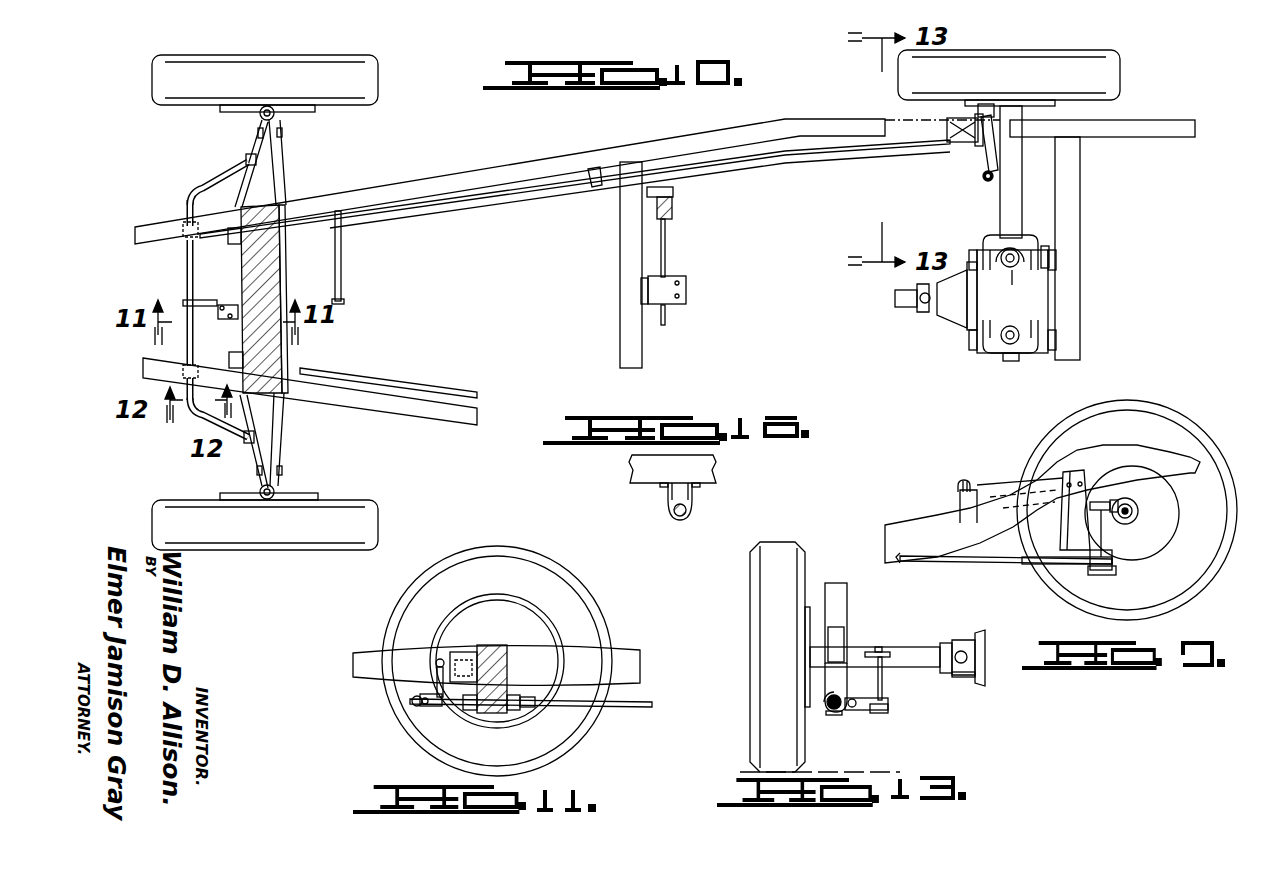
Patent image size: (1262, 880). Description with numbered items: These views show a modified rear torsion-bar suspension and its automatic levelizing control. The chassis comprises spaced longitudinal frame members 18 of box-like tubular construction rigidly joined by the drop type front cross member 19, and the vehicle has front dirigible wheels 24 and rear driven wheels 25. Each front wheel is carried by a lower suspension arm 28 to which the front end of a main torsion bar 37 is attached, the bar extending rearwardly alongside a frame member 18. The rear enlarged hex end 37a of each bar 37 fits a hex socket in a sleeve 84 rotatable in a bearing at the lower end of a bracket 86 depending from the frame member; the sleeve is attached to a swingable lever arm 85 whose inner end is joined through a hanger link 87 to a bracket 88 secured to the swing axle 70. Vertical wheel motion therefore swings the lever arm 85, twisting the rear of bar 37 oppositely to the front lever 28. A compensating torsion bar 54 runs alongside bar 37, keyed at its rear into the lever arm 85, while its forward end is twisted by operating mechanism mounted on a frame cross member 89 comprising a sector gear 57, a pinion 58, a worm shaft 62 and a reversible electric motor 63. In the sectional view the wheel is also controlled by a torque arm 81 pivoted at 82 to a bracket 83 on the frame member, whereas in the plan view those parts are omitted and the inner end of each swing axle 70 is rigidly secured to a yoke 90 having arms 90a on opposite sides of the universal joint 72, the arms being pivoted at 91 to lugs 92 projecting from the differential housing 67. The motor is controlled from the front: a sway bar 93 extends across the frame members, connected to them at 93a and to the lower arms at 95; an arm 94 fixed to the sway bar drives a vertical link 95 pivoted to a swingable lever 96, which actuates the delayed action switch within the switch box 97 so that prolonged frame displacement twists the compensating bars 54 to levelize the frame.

In FIG. 10, the longitudinal frame member 18 is at (530, 162).
In FIG. 12, the longitudinal frame member 18 is at (628, 470).
In FIG. 11, the longitudinal frame member 18 is at (620, 656).
In FIG. 13, the longitudinal frame member 18 is at (846, 624).
In FIG. 9, the longitudinal frame member 18 is at (888, 523).
In FIG. 10, the front cross member 19 is at (282, 262).
In FIG. 11, the front cross member 19 is at (508, 662).
In FIG. 10, the front dirigible wheel 24 is at (368, 80).
In FIG. 11, the front dirigible wheel 24 is at (565, 592).
In FIG. 10, the rear driven wheel 25 is at (1118, 70).
In FIG. 13, the rear driven wheel 25 is at (790, 548).
In FIG. 9, the rear driven wheel 25 is at (1150, 403).
In FIG. 10, the lower suspension arm 28 is at (276, 185).
In FIG. 10, the main torsion bar 37 is at (450, 205).
In FIG. 11, the main torsion bar 37 is at (632, 707).
In FIG. 13, the main torsion bar 37 is at (828, 716).
In FIG. 9, the main torsion bar 37 is at (985, 563).
In FIG. 10, the enlarged hex end 37a is at (988, 108).
In FIG. 10, the compensating torsion bar 54 is at (779, 167).
In FIG. 13, the compensating torsion bar 54 is at (845, 712).
In FIG. 9, the compensating torsion bar 54 is at (1095, 570).
In FIG. 10, the sector gear 57 is at (675, 215).
In FIG. 10, the pinion 58 is at (592, 190).
In FIG. 10, the shaft 62 is at (668, 252).
In FIG. 10, the reversible electric motor 63 is at (680, 300).
In FIG. 10, the differential housing 67 is at (1000, 305).
In FIG. 10, the swing axle 70 is at (1022, 190).
In FIG. 13, the swing axle 70 is at (925, 650).
In FIG. 9, the swing axle 70 is at (1140, 513).
In FIG. 10, the universal joint 72 is at (1015, 273).
In FIG. 13, the universal joint 72 is at (958, 678).
In FIG. 9, the torque arm 81 is at (980, 485).
In FIG. 9, the pivot 82 is at (969, 480).
In FIG. 9, the bracket 83 is at (960, 498).
In FIG. 10, the sleeve 84 is at (975, 142).
In FIG. 10, the lever arm 85 is at (985, 170).
In FIG. 13, the lever arm 85 is at (878, 714).
In FIG. 9, the lever arm 85 is at (1118, 572).
In FIG. 10, the bracket 86 is at (950, 120).
In FIG. 13, the bracket 86 is at (840, 672).
In FIG. 9, the bracket 86 is at (1076, 470).
In FIG. 13, the hanger link 87 is at (884, 690).
In FIG. 9, the hanger link 87 is at (1105, 545).
In FIG. 10, the bracket 88 is at (988, 182).
In FIG. 13, the bracket 88 is at (880, 652).
In FIG. 9, the bracket 88 is at (1118, 512).
In FIG. 10, the frame cross member 89 is at (643, 353).
In FIG. 10, the yoke 90 is at (1018, 238).
In FIG. 13, the yoke 90 is at (968, 645).
In FIG. 10, the yoke arm 90a is at (1035, 250).
In FIG. 10, the pivot 91 is at (1050, 256).
In FIG. 10, the lug 92 is at (1056, 262).
In FIG. 10, the sway bar 93 is at (187, 263).
In FIG. 12, the sway bar 93 is at (683, 518).
In FIG. 10, the sway bar connection 93a is at (228, 243).
In FIG. 10, the arm 94 is at (215, 300).
In FIG. 12, the arm 94 is at (668, 503).
In FIG. 11, the arm 94 is at (430, 706).
In FIG. 10, the vertical link 95 is at (245, 163).
In FIG. 11, the vertical link 95 is at (435, 692).
In FIG. 11, the vertically swingable lever 96 is at (440, 660).
In FIG. 10, the switch box 97 is at (287, 296).
In FIG. 11, the switch box 97 is at (465, 652).